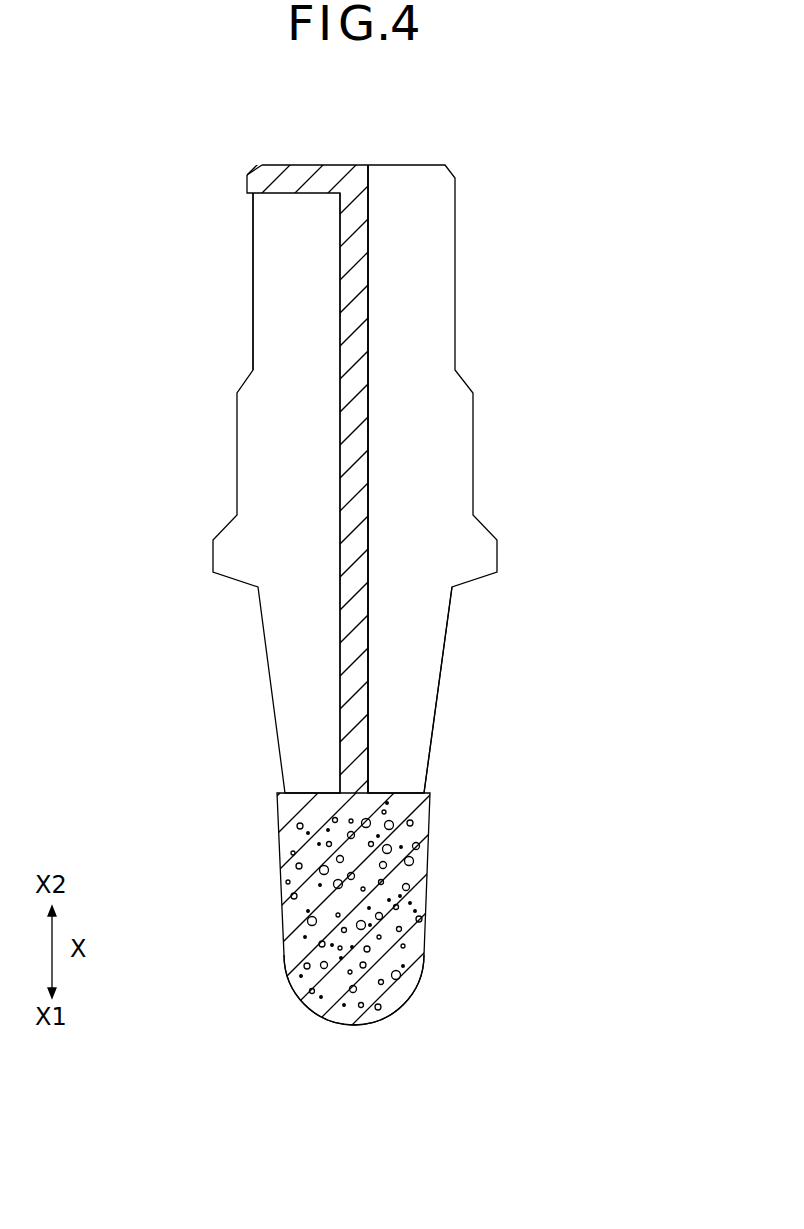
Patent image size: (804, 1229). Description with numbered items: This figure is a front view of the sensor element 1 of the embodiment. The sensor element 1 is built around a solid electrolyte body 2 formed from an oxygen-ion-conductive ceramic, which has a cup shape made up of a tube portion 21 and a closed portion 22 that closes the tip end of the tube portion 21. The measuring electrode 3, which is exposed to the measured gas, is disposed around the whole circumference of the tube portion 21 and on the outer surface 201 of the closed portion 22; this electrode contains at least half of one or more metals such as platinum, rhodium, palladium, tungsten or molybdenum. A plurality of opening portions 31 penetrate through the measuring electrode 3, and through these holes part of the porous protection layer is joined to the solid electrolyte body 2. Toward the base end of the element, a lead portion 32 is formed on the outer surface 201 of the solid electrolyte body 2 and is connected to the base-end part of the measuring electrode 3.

The sensor element 1 is at (500, 165).
The solid electrolyte body 2 is at (440, 693).
The measuring electrode 3 is at (332, 959).
The tube portion 21 is at (300, 735).
The closed portion 22 is at (345, 1025).
The opening portions 31 is at (320, 897).
The lead portion 32 is at (357, 647).
The outer surface 201 is at (428, 765).